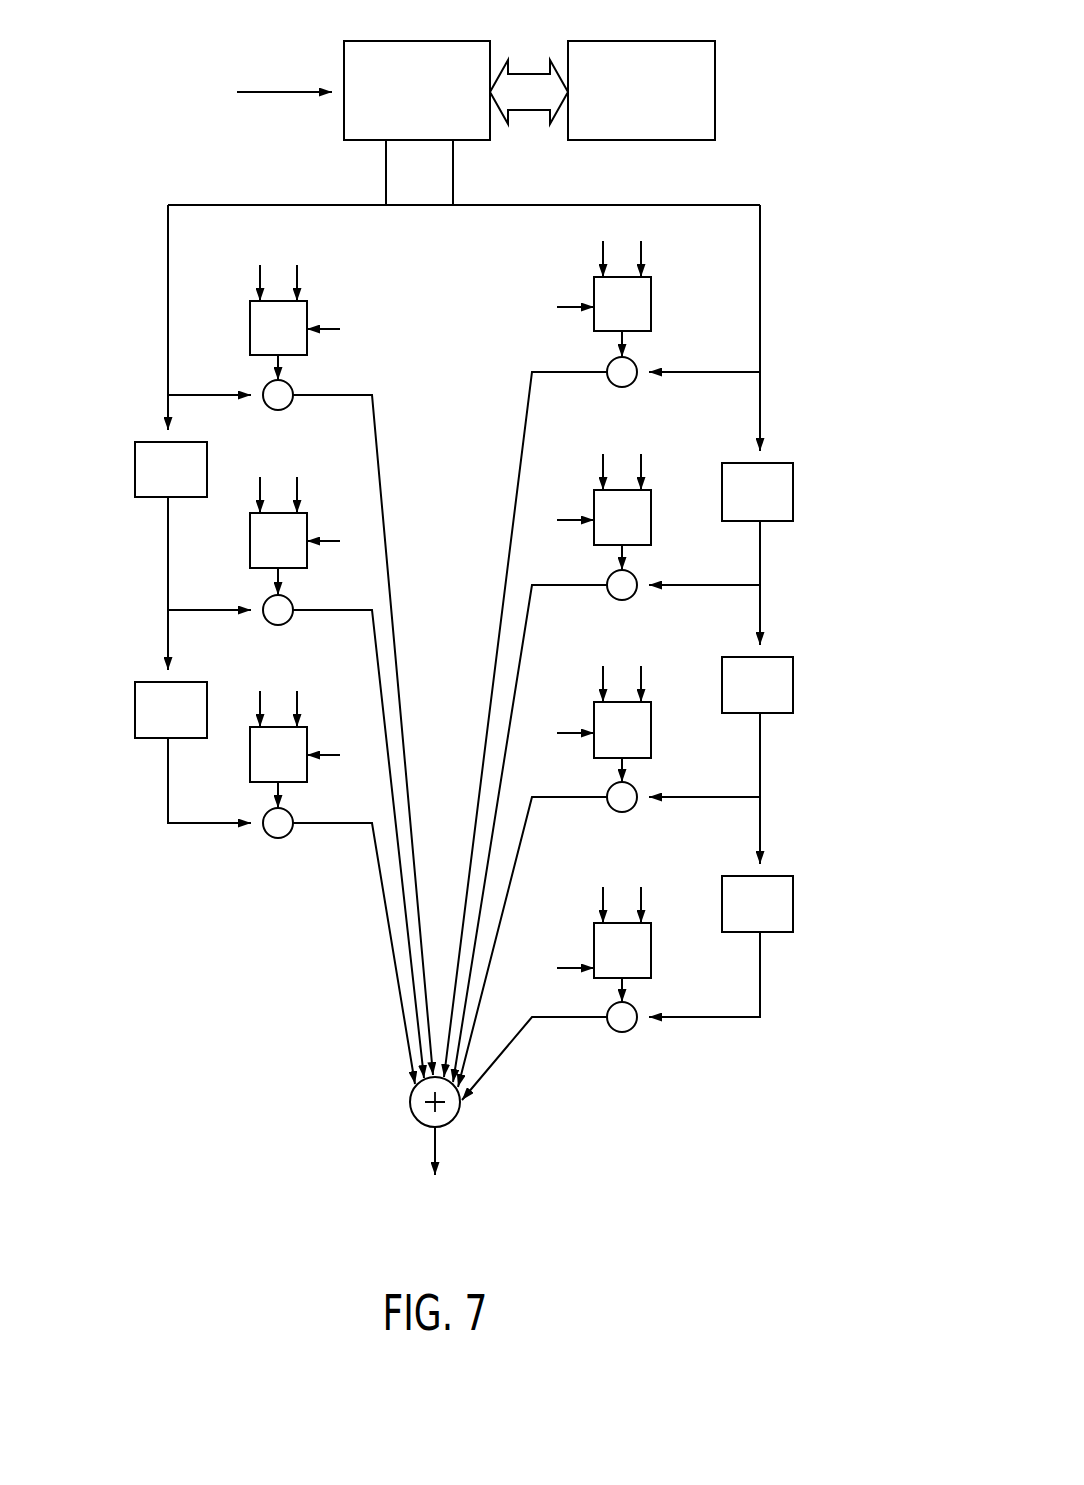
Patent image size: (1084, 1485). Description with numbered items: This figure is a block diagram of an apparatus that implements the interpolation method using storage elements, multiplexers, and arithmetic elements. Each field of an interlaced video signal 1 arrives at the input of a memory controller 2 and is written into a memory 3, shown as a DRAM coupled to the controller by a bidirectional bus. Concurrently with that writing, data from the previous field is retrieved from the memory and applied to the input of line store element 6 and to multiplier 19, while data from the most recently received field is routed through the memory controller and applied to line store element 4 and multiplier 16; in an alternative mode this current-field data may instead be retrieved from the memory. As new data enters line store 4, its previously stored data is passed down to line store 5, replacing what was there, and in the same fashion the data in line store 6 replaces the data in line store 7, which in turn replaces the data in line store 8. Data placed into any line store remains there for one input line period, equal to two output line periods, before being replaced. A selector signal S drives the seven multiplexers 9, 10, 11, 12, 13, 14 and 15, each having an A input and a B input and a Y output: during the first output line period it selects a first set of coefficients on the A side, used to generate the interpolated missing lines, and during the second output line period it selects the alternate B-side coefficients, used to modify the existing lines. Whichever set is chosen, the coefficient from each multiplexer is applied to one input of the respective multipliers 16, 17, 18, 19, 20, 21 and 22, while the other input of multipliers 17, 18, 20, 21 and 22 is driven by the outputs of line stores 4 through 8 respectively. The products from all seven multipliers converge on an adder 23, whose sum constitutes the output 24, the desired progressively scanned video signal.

The interlaced video signal 1 is at (269, 92).
The memory controller 2 is at (462, 41).
The memory 3 is at (690, 41).
The line store element 4 is at (135, 470).
The line store element 5 is at (135, 710).
The line store element 6 is at (793, 490).
The line store element 7 is at (793, 684).
The line store element 8 is at (793, 903).
The multiplexer 9 is at (250, 318).
The multiplexer 10 is at (250, 530).
The multiplexer 11 is at (250, 744).
The multiplexer 12 is at (651, 297).
The multiplexer 13 is at (651, 510).
The multiplexer 14 is at (651, 723).
The multiplexer 15 is at (651, 943).
The multiplier 16 is at (283, 409).
The multiplier 17 is at (283, 624).
The multiplier 18 is at (283, 837).
The multiplier 19 is at (622, 387).
The multiplier 20 is at (622, 600).
The multiplier 21 is at (622, 812).
The multiplier 22 is at (622, 1032).
The adder 23 is at (449, 1123).
The output 24 is at (431, 1131).